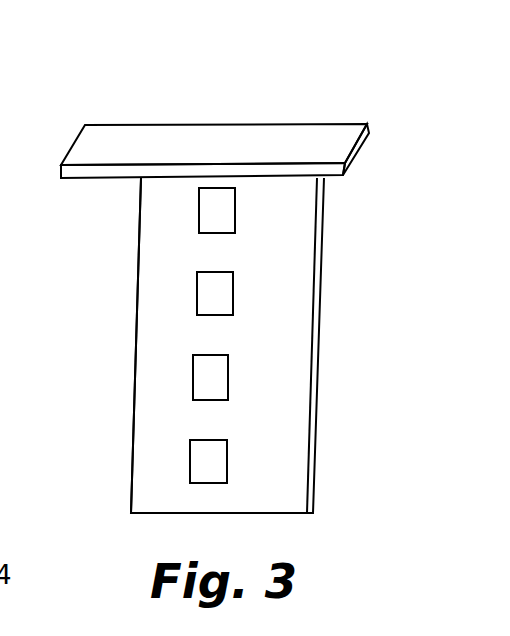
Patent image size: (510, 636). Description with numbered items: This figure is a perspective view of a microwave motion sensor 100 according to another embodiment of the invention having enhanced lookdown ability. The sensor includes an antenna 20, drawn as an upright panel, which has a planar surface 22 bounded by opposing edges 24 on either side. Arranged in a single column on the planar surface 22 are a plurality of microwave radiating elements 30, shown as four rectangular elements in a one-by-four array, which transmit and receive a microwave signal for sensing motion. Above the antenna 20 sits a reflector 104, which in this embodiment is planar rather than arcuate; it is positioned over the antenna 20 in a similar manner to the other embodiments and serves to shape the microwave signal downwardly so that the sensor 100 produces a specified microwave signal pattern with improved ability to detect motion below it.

The microwave motion sensor 100 is at (122, 98).
The reflector 104 is at (214, 137).
The antenna 20 is at (322, 371).
The planar surface 22 is at (158, 452).
The opposing edges 24 is at (135, 367).
The microwave radiating elements 30 is at (208, 212).